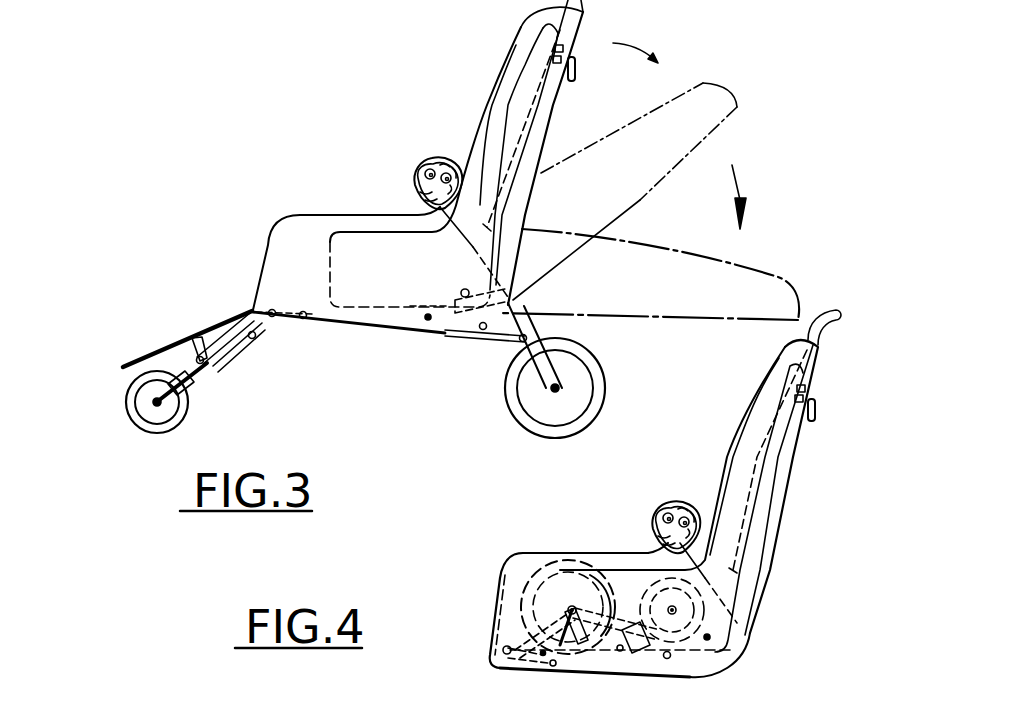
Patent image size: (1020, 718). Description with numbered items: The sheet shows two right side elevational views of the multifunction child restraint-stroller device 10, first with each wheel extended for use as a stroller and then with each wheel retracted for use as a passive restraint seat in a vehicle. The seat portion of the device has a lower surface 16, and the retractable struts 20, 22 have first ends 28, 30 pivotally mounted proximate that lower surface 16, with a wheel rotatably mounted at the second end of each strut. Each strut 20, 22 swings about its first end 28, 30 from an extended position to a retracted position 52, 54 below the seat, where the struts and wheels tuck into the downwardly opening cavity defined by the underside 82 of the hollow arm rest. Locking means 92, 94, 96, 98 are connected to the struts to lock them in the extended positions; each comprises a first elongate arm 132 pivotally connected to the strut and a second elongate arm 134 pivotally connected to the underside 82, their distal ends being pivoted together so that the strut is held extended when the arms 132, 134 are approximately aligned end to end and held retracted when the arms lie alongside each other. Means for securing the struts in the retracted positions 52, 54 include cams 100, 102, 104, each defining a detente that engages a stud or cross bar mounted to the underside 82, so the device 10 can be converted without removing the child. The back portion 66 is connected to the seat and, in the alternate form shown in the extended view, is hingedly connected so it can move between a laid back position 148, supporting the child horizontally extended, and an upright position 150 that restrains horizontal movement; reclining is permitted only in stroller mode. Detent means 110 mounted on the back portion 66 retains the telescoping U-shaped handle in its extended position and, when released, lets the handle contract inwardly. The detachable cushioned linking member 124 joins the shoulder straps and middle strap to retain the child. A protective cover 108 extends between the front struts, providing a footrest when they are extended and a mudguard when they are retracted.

In FIG. 4, the multifunction child restraint-stroller device 10 is at (806, 449).
In FIG. 3, the lower surface 16 is at (402, 335).
In FIG. 3, the strut 20 is at (133, 427).
In FIG. 4, the strut 20 is at (687, 613).
In FIG. 3, the strut 22 is at (530, 440).
In FIG. 4, the strut 22 is at (530, 600).
In FIG. 3, the first end 28 is at (272, 320).
In FIG. 3, the first end 30 is at (462, 297).
In FIG. 4, the retracted position 52 is at (648, 653).
In FIG. 4, the retracted position 54 is at (567, 645).
In FIG. 3, the back portion 66 is at (541, 143).
In FIG. 3, the underside 82 is at (372, 333).
In FIG. 3, the locking means 92 is at (237, 312).
In FIG. 3, the locking means 94 is at (253, 339).
In FIG. 3, the locking means 96 is at (477, 334).
In FIG. 3, the locking means 98 is at (557, 268).
In FIG. 4, the cam 100 is at (494, 574).
In FIG. 4, the cam 102 is at (548, 662).
In FIG. 4, the cam 104 is at (668, 657).
In FIG. 3, the protective cover 108 is at (137, 362).
In FIG. 3, the detent means 110 is at (576, 62).
In FIG. 4, the detent means 110 is at (815, 402).
In FIG. 3, the detachable cushioned linking member 124 is at (417, 180).
In FIG. 3, the first elongate arm 132 is at (237, 350).
In FIG. 3, the second elongate arm 134 is at (305, 318).
In FIG. 3, the laid back position 148 is at (705, 285).
In FIG. 3, the upright position 150 is at (525, 187).